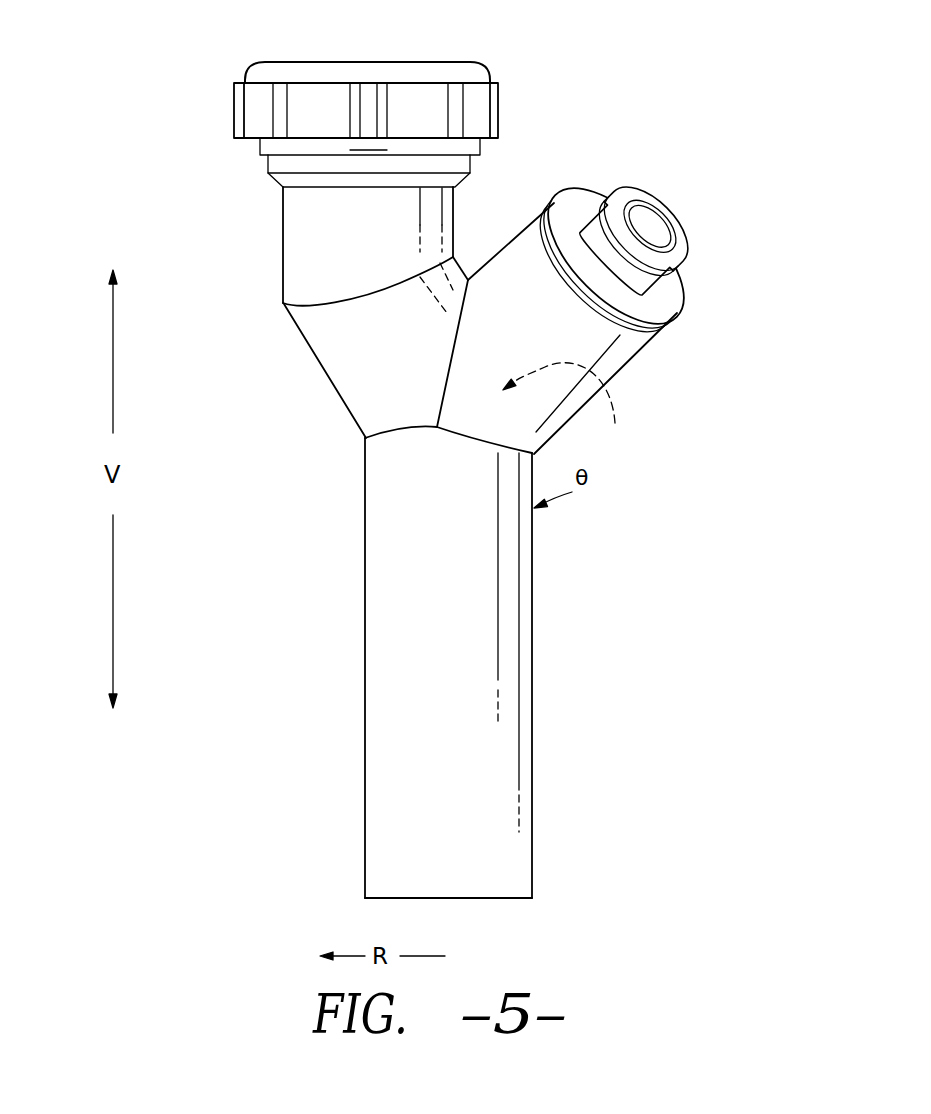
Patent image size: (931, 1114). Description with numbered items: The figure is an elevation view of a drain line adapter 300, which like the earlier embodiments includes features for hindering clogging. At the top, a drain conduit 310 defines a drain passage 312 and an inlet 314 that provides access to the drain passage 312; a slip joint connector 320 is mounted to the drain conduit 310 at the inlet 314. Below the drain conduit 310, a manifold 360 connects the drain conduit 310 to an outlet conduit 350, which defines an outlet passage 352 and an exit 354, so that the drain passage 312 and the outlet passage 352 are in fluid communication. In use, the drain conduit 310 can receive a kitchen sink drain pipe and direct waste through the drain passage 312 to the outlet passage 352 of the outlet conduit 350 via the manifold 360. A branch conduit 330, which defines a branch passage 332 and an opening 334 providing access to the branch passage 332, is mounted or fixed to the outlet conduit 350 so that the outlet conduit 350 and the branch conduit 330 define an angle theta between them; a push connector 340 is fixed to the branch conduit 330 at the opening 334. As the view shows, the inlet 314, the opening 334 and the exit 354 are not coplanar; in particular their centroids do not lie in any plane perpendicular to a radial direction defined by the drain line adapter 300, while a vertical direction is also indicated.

The drain line adapter 300 is at (701, 44).
The drain conduit 310 is at (307, 262).
The drain passage 312 is at (352, 258).
The inlet 314 is at (345, 60).
The slip joint connector 320 is at (477, 110).
The branch conduit 330 is at (607, 359).
The branch passage 332 is at (578, 420).
The opening 334 is at (632, 330).
The push connector 340 is at (567, 209).
The outlet conduit 350 is at (497, 772).
The outlet passage 352 is at (464, 670).
The exit 354 is at (398, 905).
The manifold 360 is at (350, 373).